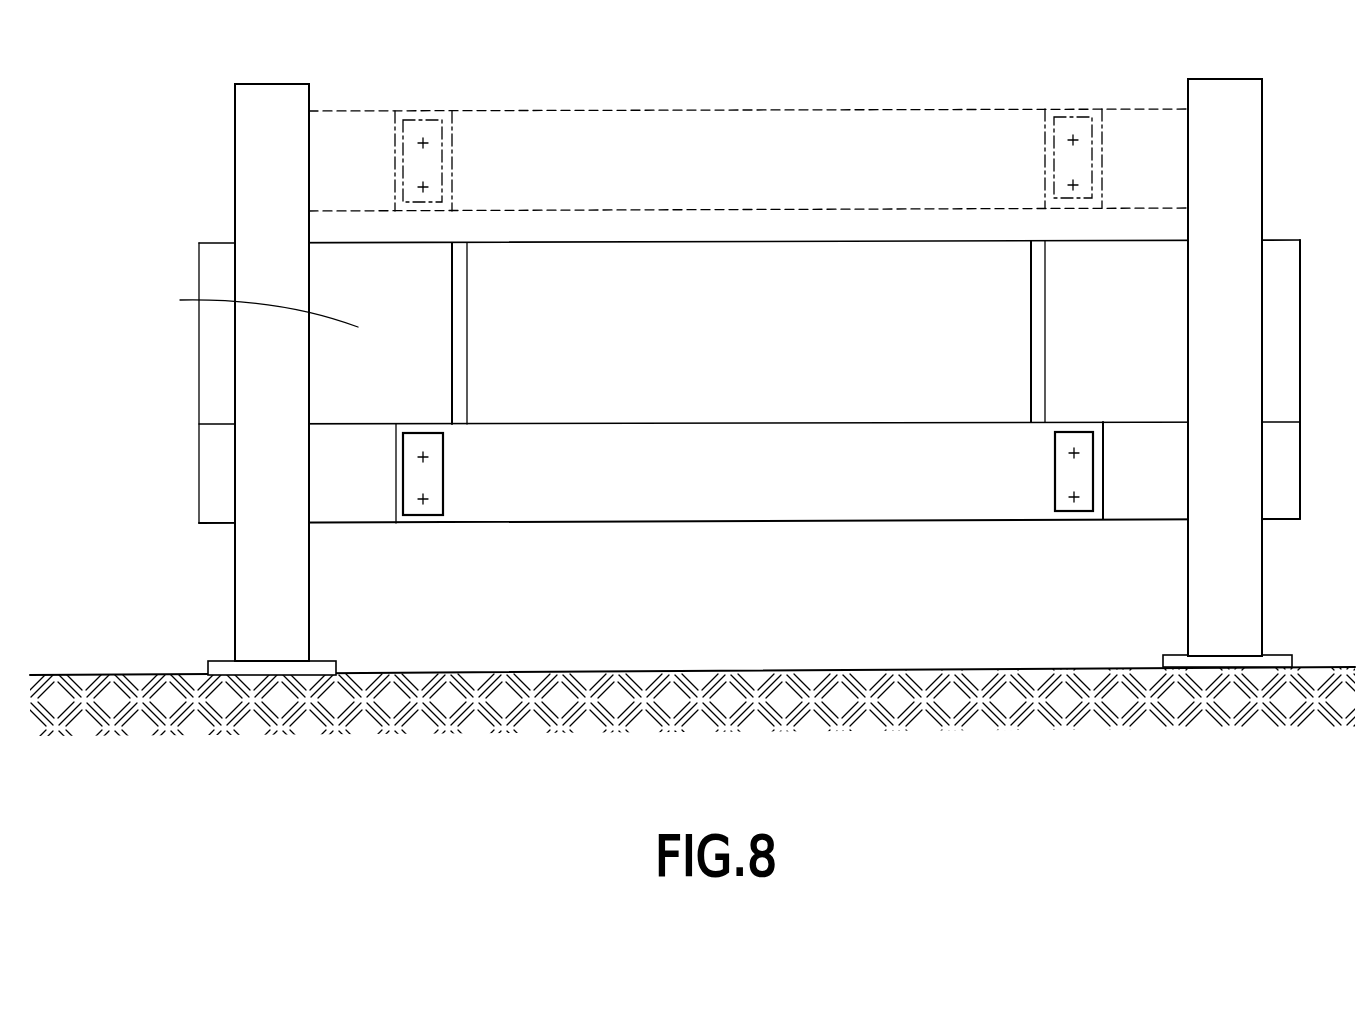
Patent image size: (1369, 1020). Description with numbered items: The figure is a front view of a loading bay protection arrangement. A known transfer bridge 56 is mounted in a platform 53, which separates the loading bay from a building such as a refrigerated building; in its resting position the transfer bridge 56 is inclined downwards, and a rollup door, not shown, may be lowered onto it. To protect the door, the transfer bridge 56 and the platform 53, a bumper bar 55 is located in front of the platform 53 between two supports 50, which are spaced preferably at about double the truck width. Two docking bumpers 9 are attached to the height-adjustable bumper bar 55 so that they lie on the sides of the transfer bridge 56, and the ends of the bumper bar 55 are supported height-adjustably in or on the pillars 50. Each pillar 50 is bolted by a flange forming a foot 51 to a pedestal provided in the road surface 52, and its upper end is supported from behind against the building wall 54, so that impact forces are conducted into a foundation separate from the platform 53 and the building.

The docking bumper 9 is at (435, 480).
The support 50 is at (258, 591).
The foot 51 is at (316, 668).
The road surface 52 is at (690, 672).
The platform 53 is at (358, 327).
The building wall 54 is at (748, 160).
The bumper bar 55 is at (912, 507).
The transfer bridge 56 is at (661, 347).